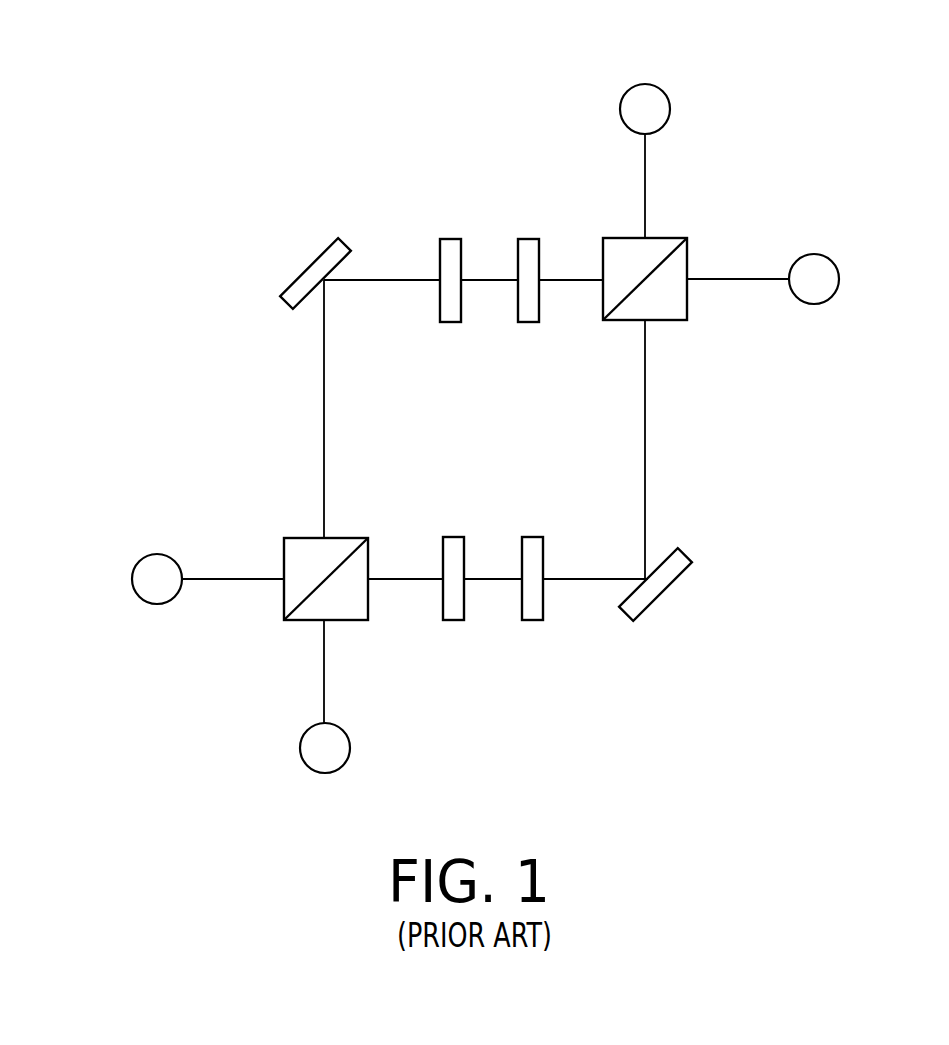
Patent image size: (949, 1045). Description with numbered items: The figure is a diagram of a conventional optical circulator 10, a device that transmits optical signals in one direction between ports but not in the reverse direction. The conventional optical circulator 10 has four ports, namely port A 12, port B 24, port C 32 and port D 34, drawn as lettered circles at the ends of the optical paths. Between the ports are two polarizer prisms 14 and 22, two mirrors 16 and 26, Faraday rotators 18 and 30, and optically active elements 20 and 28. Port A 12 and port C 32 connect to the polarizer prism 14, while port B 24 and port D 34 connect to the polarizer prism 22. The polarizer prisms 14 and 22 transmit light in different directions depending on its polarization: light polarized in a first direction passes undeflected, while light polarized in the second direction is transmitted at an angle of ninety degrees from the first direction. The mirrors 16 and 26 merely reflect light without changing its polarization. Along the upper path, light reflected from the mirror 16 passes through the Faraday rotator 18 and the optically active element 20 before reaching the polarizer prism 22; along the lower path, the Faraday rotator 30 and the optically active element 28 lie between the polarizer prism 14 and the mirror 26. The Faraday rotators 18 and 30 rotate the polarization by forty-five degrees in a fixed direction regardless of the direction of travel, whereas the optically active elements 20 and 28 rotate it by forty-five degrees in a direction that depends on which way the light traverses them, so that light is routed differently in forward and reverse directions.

The conventional optical circulator 10 is at (78, 391).
The port A 12 is at (130, 580).
The polarizer prism 14 is at (298, 538).
The mirror 16 is at (321, 248).
The Faraday rotator 18 is at (452, 239).
The optically active element 20 is at (530, 239).
The polarizer prism 22 is at (613, 238).
The port B 24 is at (839, 275).
The mirror 26 is at (650, 612).
The optically active element 28 is at (533, 537).
The Faraday rotator 30 is at (455, 537).
The port C 32 is at (302, 748).
The port D 34 is at (670, 105).